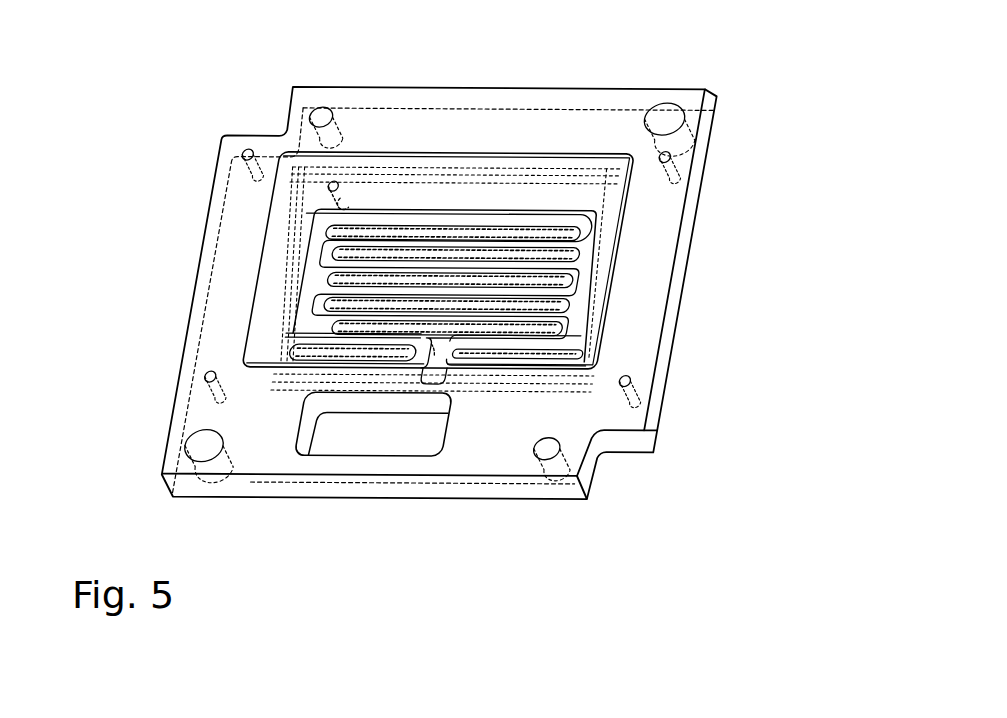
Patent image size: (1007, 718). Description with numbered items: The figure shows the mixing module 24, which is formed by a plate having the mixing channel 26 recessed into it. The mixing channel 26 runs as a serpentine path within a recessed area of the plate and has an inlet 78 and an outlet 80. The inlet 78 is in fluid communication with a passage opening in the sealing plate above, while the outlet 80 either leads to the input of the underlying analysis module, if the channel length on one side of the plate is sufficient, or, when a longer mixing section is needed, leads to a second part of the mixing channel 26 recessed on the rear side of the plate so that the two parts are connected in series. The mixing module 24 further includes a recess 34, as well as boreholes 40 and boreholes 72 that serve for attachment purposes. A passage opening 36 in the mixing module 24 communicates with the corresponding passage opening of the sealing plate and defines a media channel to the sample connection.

The mixing module 24 is at (722, 272).
The mixing channel 26 is at (268, 252).
The recess 34 is at (330, 447).
The passage opening 36 is at (334, 185).
The boreholes 40 is at (322, 110).
The boreholes 72 is at (248, 155).
The inlet 78 is at (448, 365).
The outlet 80 is at (455, 333).